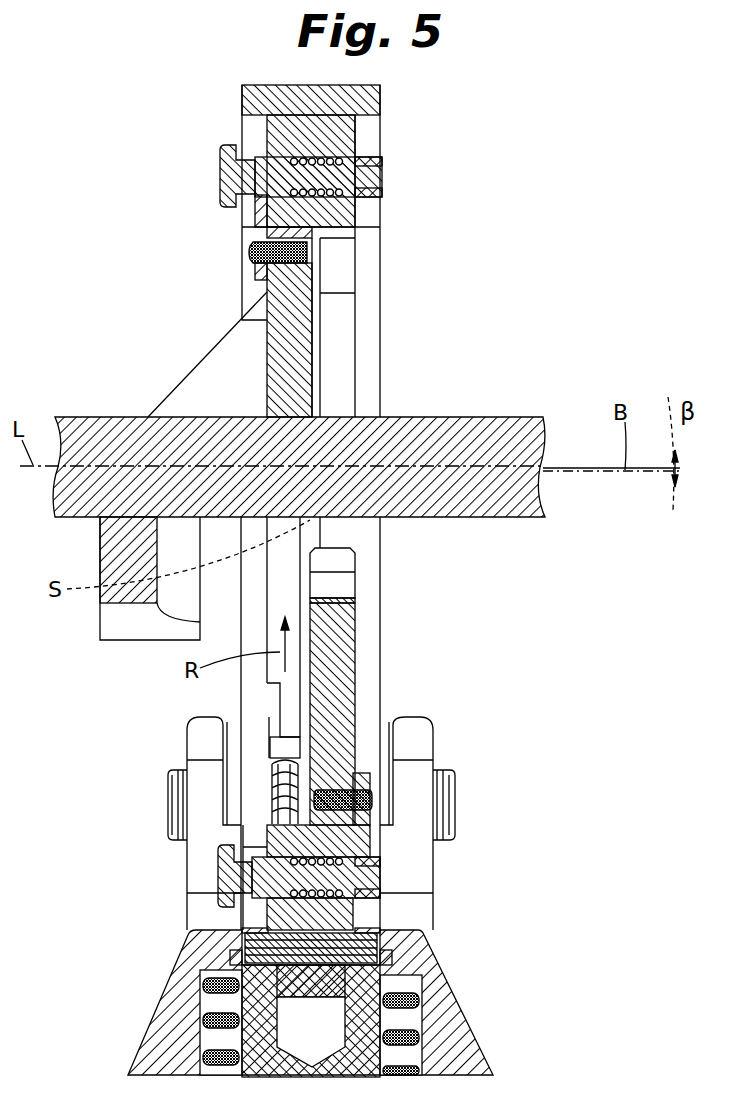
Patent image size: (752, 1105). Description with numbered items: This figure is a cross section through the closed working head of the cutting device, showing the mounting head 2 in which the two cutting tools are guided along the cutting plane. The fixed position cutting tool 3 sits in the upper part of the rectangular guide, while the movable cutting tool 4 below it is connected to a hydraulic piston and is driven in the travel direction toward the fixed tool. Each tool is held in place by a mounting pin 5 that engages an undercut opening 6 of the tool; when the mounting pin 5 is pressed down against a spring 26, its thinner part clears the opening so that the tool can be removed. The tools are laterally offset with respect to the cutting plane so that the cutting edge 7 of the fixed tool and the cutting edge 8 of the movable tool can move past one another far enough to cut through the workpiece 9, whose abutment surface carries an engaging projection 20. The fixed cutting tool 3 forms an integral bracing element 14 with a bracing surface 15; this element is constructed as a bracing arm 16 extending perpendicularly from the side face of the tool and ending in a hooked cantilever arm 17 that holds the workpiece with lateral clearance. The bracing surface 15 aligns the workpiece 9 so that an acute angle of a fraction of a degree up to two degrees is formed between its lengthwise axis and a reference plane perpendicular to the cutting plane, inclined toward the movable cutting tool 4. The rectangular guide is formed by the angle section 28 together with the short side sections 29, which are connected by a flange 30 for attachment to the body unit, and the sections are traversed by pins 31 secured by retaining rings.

The mounting head 2 is at (450, 287).
The fixed position cutting tool 3 is at (290, 306).
The movable cutting tool 4 is at (335, 668).
The mounting pin 5 is at (232, 178).
The undercut opening 6 is at (262, 200).
The cutting edge 7 is at (297, 417).
The cutting edge 8 is at (340, 600).
The workpiece 9 is at (476, 432).
The bracing element 14 is at (205, 348).
The bracing surface 15 is at (131, 517).
The bracing arm 16 is at (215, 390).
The hooked cantilever arm 17 is at (120, 623).
The engaging projection 20 is at (337, 586).
The spring 26 is at (330, 160).
The angle section 28 is at (270, 94).
The short side section 29 is at (213, 913).
The flange 30 is at (175, 1002).
The pin 31 is at (173, 797).